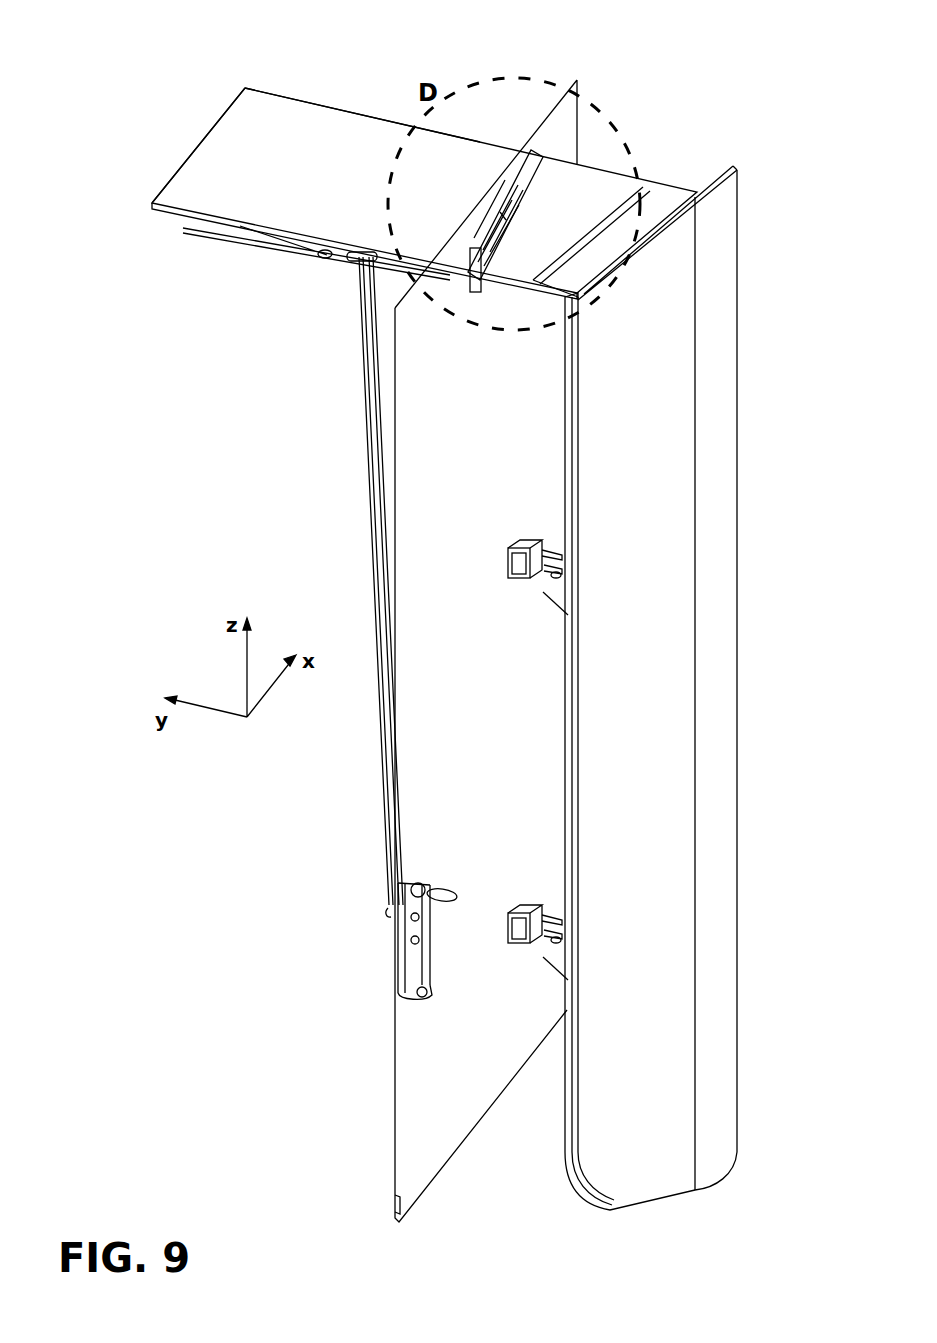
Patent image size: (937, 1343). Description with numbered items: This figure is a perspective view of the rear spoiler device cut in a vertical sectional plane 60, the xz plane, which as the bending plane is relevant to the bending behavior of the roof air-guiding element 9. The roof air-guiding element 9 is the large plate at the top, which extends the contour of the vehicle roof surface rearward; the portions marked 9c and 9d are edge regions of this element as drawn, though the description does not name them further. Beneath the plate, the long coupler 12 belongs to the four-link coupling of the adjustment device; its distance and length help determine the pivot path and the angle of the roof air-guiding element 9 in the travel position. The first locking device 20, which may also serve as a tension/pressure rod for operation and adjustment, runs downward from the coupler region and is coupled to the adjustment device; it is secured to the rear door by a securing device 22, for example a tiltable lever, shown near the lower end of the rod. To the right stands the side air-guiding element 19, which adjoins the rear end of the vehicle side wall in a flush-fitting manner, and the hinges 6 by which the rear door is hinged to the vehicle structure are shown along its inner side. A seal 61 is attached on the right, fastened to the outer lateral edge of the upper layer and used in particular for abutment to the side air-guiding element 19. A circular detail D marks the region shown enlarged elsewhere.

The hinges 6 is at (557, 552).
The roof air-guiding element 9 is at (328, 136).
The rear edge of cover plate 9c is at (298, 93).
The side edge of cover plate 9d is at (215, 157).
The long coupler 12 is at (302, 258).
The side air-guiding element 19 is at (665, 745).
The first locking device 20 is at (368, 520).
The securing device 22 is at (415, 943).
The vertical sectional plane 60 is at (425, 1097).
The seal 61 is at (663, 203).